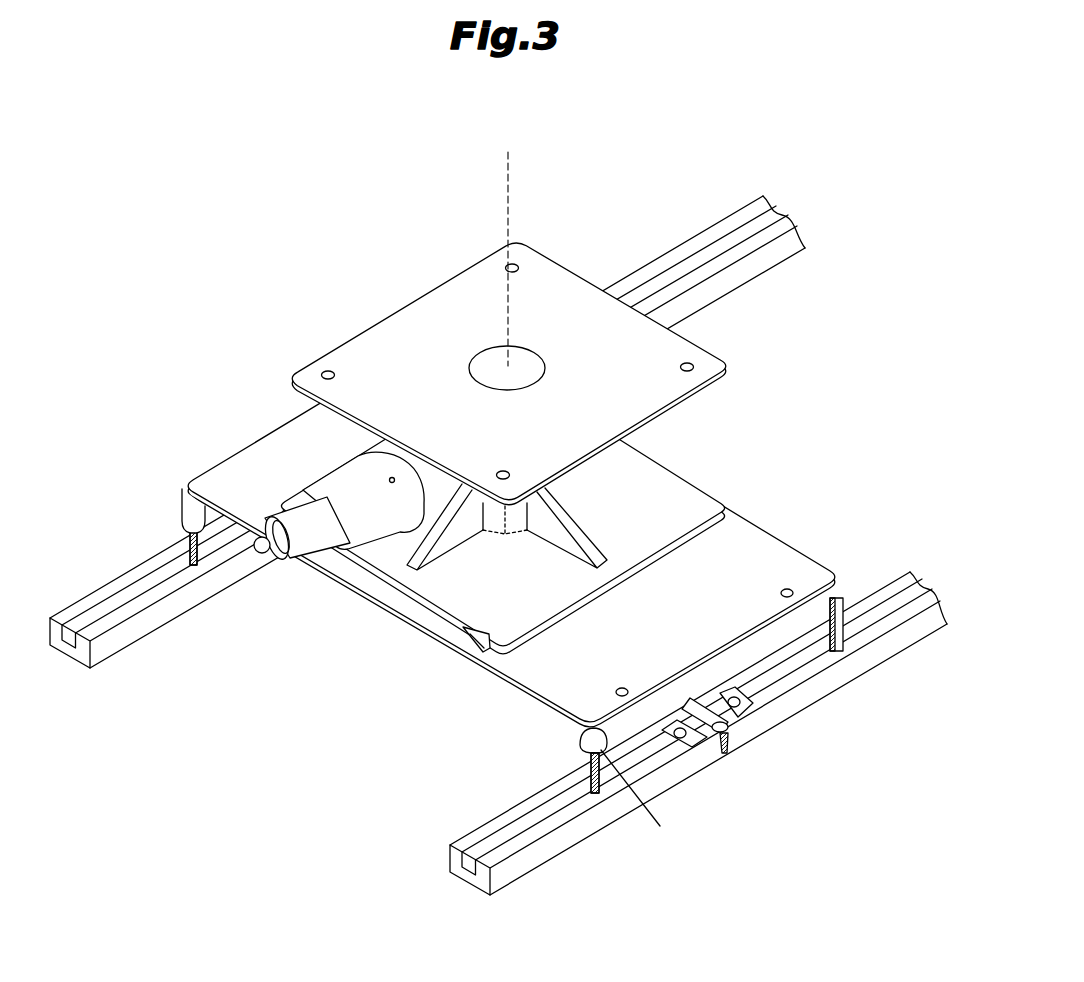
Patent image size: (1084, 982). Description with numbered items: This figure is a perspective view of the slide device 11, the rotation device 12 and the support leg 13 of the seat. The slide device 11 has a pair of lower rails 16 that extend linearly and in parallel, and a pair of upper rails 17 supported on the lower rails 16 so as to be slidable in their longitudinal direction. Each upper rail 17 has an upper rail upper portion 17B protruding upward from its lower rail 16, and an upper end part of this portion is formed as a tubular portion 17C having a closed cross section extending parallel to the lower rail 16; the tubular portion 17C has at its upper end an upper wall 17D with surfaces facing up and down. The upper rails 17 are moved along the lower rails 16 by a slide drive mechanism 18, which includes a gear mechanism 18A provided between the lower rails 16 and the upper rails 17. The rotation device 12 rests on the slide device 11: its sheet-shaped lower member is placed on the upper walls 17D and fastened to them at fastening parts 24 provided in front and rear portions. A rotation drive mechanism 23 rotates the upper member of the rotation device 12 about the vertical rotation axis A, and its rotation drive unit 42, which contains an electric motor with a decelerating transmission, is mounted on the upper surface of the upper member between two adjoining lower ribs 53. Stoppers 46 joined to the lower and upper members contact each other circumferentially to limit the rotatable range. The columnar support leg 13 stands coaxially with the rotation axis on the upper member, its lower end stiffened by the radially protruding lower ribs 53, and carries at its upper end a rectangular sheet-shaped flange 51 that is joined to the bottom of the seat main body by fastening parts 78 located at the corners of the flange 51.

The slide device 11 is at (498, 587).
The rotation device 12 is at (732, 504).
The support leg 13 is at (507, 520).
The lower rail 16 is at (128, 636).
The upper rail 17 is at (393, 668).
The upper rail upper portion 17B is at (590, 770).
The tubular portion 17C is at (579, 737).
The upper wall 17D is at (628, 823).
The slide drive mechanism 18 is at (763, 749).
The gear mechanism 18A is at (740, 706).
The rotation drive mechanism 23 is at (323, 514).
The fastening part 24 is at (785, 592).
The rotation drive unit 42 is at (362, 510).
The stopper 46 is at (462, 632).
The flange 51 is at (524, 313).
The lower rib 53 is at (582, 517).
The fastening part 78 is at (515, 264).